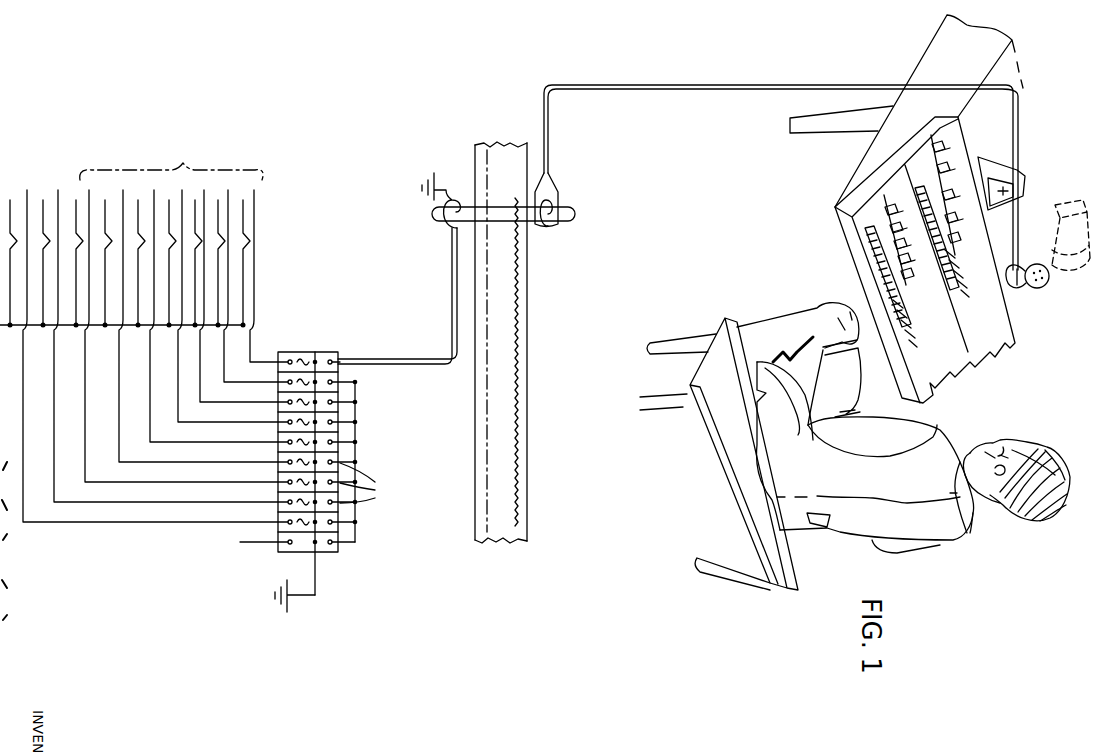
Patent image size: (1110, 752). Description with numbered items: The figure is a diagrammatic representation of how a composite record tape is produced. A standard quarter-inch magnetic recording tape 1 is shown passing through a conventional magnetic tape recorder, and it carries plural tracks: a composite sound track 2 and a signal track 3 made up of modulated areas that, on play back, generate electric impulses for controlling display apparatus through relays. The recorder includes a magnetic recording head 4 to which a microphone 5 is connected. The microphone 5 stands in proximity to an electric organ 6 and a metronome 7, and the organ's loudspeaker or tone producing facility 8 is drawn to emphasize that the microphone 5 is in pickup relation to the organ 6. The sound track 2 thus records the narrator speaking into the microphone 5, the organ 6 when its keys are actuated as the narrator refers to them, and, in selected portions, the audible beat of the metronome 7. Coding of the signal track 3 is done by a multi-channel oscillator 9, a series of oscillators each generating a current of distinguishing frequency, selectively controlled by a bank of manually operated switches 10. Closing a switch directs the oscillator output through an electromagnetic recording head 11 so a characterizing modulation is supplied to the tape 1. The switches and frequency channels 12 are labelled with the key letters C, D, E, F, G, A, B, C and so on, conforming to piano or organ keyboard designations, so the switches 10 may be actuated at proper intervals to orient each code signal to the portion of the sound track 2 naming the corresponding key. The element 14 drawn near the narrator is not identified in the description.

The conduit pipe 1 is at (539, 394).
The cable 2 is at (517, 330).
The center line of conduit 3 is at (487, 452).
The hook clip 4 is at (565, 220).
The signal bell 5 is at (1043, 288).
The terminal box 6 is at (332, 341).
The switch box 7 is at (997, 160).
The phantom lamp 8 is at (1076, 263).
The wall panel 9 is at (938, 62).
The switch bank 10 is at (219, 159).
The ground clip 11 is at (471, 212).
The lead wires 12 is at (368, 483).
The operator 14 is at (944, 556).